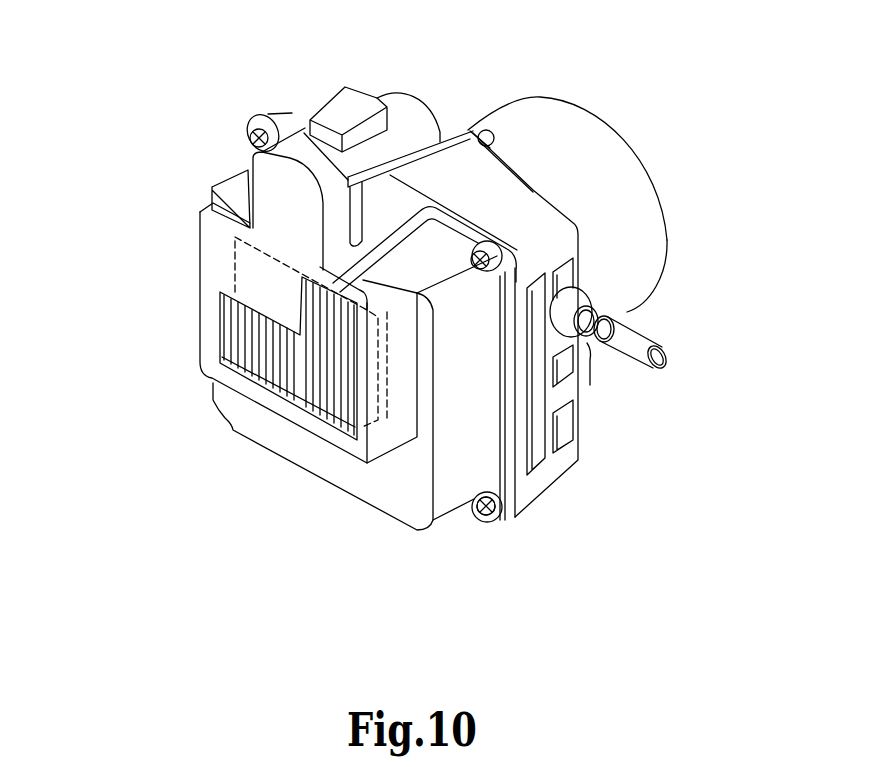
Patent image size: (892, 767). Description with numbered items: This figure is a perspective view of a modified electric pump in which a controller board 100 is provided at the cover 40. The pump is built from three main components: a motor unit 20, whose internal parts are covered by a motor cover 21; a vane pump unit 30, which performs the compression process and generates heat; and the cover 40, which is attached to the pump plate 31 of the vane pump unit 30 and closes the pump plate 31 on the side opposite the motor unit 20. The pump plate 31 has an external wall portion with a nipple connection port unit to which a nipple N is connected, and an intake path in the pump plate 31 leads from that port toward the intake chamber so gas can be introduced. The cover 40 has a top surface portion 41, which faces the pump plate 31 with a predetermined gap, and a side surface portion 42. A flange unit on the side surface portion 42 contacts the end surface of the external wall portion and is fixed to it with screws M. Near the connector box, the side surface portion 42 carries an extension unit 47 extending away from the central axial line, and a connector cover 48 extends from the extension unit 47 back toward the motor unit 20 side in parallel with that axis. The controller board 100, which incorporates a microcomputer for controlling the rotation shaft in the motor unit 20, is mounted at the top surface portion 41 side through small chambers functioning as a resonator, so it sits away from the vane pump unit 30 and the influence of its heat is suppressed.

The motor unit 20 is at (570, 92).
The motor cover 21 is at (638, 282).
The vane pump unit 30 is at (566, 500).
The pump plate 31 is at (570, 463).
The cover 40 is at (441, 527).
The top surface portion 41 is at (290, 447).
The side surface portion 42 is at (460, 487).
The extension unit 47 is at (263, 195).
The connector cover 48 is at (400, 100).
The controller board 100 is at (363, 423).
The nipple N is at (620, 342).
The screws M is at (497, 523).